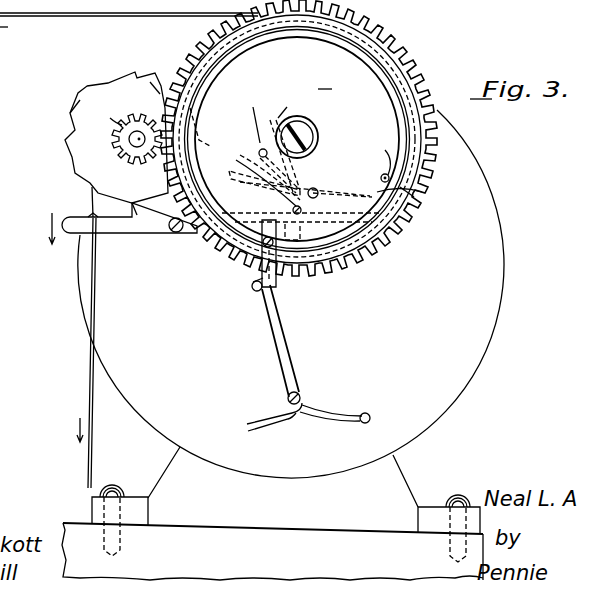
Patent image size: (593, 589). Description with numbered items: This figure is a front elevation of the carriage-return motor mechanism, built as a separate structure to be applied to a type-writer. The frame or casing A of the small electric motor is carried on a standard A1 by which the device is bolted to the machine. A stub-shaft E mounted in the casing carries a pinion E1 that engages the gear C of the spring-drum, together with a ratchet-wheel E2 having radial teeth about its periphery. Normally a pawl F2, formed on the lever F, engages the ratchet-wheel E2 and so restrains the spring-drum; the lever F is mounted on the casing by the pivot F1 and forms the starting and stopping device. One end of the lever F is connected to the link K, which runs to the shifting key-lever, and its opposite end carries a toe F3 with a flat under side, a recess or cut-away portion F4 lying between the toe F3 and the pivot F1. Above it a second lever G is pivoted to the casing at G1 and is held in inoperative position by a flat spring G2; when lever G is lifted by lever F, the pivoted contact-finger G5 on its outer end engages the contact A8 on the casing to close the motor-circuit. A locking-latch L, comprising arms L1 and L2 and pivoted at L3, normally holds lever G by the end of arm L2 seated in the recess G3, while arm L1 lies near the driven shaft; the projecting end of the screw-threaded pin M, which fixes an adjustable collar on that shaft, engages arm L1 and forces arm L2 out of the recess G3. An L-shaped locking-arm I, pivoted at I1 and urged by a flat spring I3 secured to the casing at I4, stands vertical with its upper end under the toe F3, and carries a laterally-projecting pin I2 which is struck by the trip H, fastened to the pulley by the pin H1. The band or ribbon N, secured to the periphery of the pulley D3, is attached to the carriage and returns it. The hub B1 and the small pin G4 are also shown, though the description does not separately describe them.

The motor frame A is at (185, 400).
The standard A1 is at (270, 509).
The contact A8 is at (395, 150).
The shaft hub B1 is at (318, 139).
The gear of spring-drum C is at (392, 37).
The pulley D3 is at (338, 83).
The stub-shaft E is at (122, 114).
The pinion E1 is at (108, 163).
The ratchet-wheel E2 is at (52, 124).
The lever F is at (148, 250).
The pivot F1 is at (177, 248).
The pawl F2 is at (137, 240).
The toe F3 is at (357, 282).
The recess F4 is at (300, 290).
The second lever G is at (306, 180).
The pivot G1 is at (322, 180).
The flat spring G2 is at (258, 213).
The recess G3 is at (260, 160).
The link pin G4 is at (387, 178).
The contact-finger G5 is at (415, 197).
The trip H is at (243, 328).
The pin H1 is at (230, 280).
The locking-arm I is at (262, 358).
The pivot I1 is at (336, 395).
The pin I2 is at (240, 306).
The flat spring I3 is at (326, 441).
The spring attachment I4 is at (371, 416).
The link K is at (80, 399).
The locking-latch L is at (258, 110).
The latch arm L1 is at (286, 94).
The latch arm L2 is at (285, 174).
The pivot L3 is at (240, 142).
The screw-threaded pin M is at (308, 106).
The band N is at (133, 14).